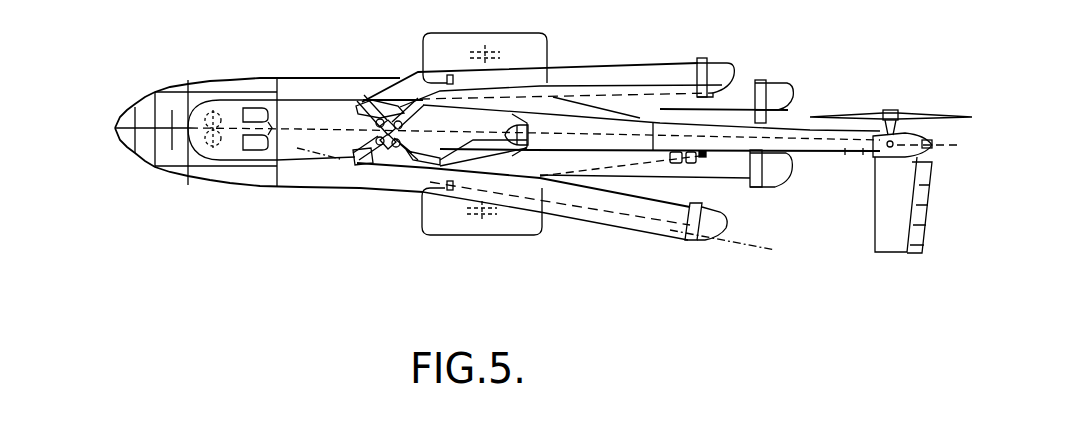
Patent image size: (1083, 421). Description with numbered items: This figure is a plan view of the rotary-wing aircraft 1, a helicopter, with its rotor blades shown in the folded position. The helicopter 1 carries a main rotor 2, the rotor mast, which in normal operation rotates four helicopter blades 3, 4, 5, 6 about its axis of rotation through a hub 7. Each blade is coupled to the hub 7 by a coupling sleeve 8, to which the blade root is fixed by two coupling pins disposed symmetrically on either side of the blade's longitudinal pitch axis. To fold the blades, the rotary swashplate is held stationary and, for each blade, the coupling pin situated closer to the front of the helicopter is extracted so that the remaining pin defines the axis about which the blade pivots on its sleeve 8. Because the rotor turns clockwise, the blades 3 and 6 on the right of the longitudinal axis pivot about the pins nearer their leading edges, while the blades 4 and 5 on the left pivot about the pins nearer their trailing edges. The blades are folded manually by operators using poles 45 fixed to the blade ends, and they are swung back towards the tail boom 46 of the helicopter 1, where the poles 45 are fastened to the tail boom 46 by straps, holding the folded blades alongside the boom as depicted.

The rotary-wing aircraft 1 is at (228, 192).
The main rotor 2 is at (362, 100).
The helicopter blade 3 is at (542, 116).
The helicopter blade 4 is at (780, 163).
The helicopter blade 5 is at (604, 205).
The helicopter blade 6 is at (723, 72).
The hub 7 is at (380, 124).
The coupling sleeve 8 is at (365, 130).
The pole 45 is at (698, 193).
The tail boom 46 is at (845, 155).